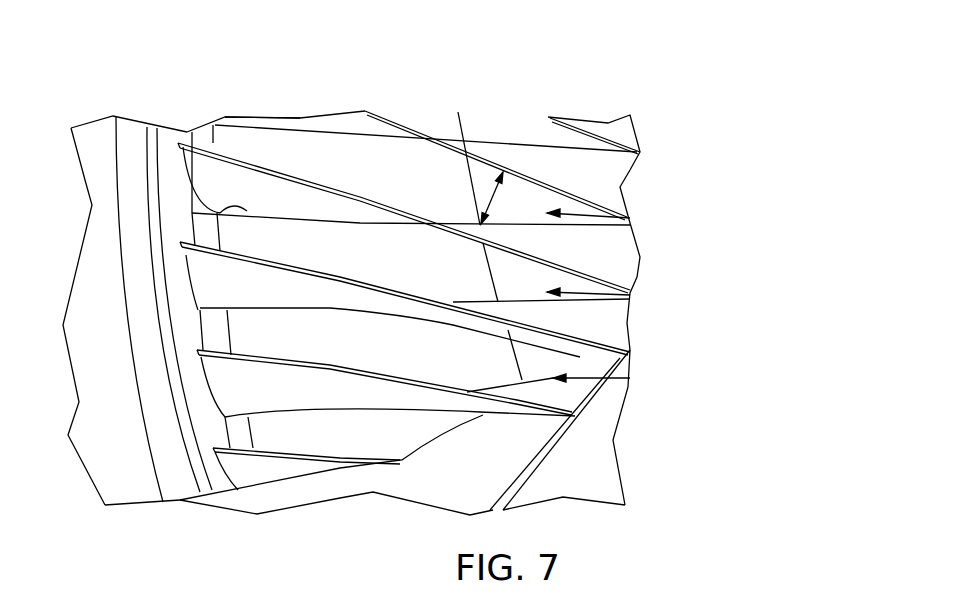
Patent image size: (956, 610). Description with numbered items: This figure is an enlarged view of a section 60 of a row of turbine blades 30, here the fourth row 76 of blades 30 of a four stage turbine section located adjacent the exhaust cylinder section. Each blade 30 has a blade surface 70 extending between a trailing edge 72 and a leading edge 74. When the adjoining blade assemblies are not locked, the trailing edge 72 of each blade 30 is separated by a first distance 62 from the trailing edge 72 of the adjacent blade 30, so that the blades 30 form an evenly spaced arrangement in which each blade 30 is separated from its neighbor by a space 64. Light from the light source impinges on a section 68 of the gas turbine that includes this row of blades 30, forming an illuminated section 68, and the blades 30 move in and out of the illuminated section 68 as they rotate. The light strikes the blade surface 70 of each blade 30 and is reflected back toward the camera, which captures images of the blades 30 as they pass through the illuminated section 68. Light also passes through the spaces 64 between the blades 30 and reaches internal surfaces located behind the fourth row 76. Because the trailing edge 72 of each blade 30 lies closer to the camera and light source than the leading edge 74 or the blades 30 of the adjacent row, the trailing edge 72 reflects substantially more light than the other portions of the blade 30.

The blade 30 is at (630, 172).
The section 60 is at (310, 520).
The first distance 62 is at (488, 197).
The space 64 is at (627, 207).
The illuminated section 68 is at (172, 488).
The blade surface 70 is at (294, 197).
The trailing edge 72 is at (289, 173).
The leading edge 74 is at (183, 133).
The fourth row 76 is at (221, 62).